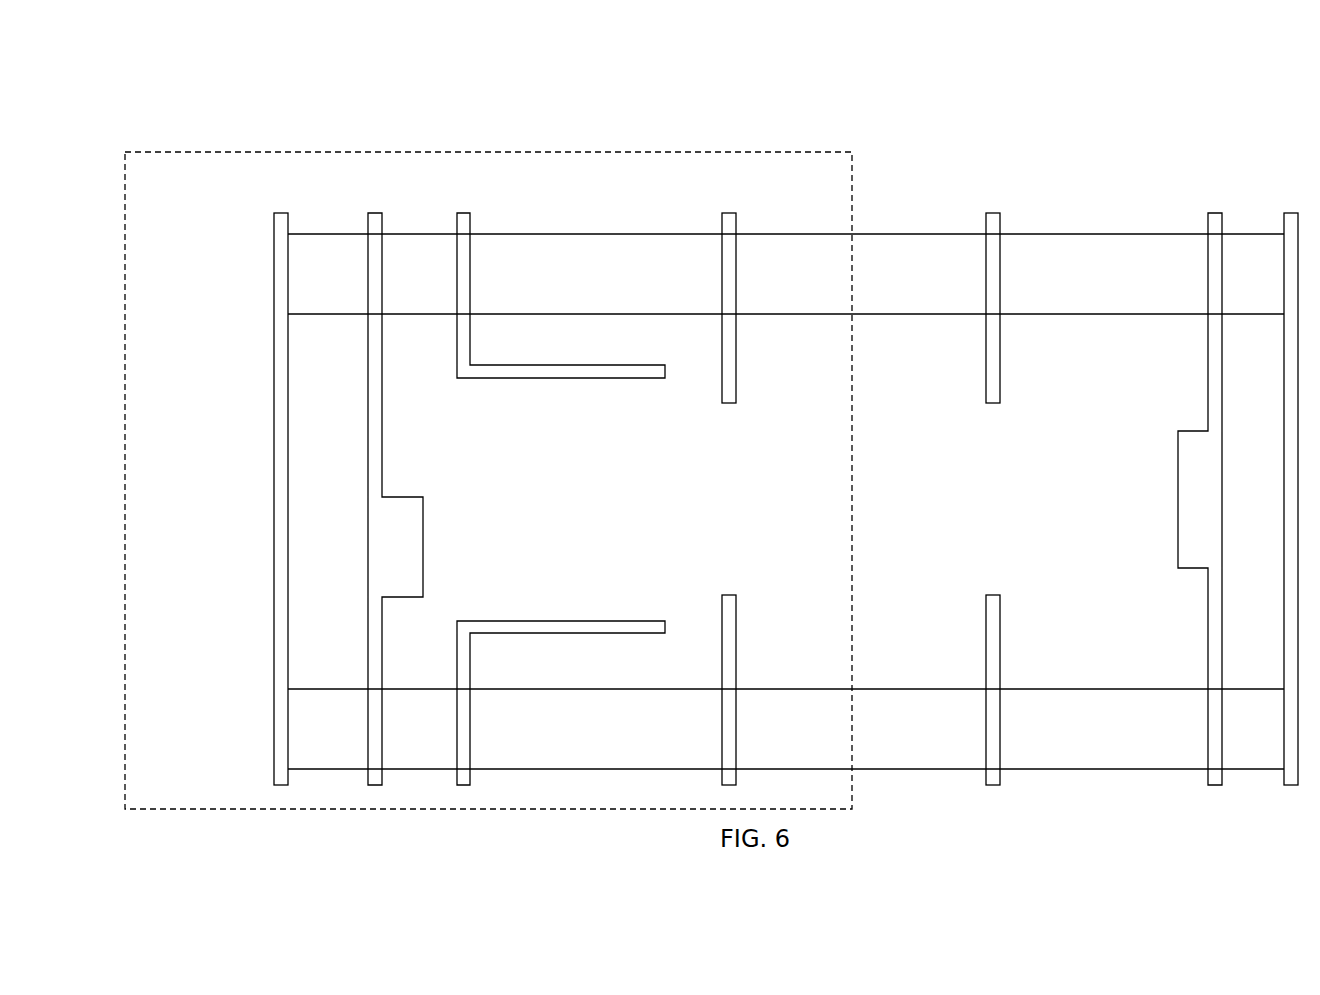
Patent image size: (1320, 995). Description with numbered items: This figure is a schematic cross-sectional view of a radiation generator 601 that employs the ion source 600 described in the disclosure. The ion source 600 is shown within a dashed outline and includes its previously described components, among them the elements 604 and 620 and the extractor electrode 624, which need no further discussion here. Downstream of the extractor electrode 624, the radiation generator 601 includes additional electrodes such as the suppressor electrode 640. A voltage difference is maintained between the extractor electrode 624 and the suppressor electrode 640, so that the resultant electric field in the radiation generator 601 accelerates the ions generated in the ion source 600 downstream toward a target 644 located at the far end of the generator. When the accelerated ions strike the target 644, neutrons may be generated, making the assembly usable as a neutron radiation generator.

The ion source 600 is at (305, 138).
The radiation generator 601 is at (576, 40).
The stepped electrode plate 604 is at (368, 536).
The L-shaped electrode plates 620 is at (457, 348).
The extractor electrode 624 is at (722, 353).
The suppressor electrode 640 is at (985, 357).
The target 644 is at (1179, 465).